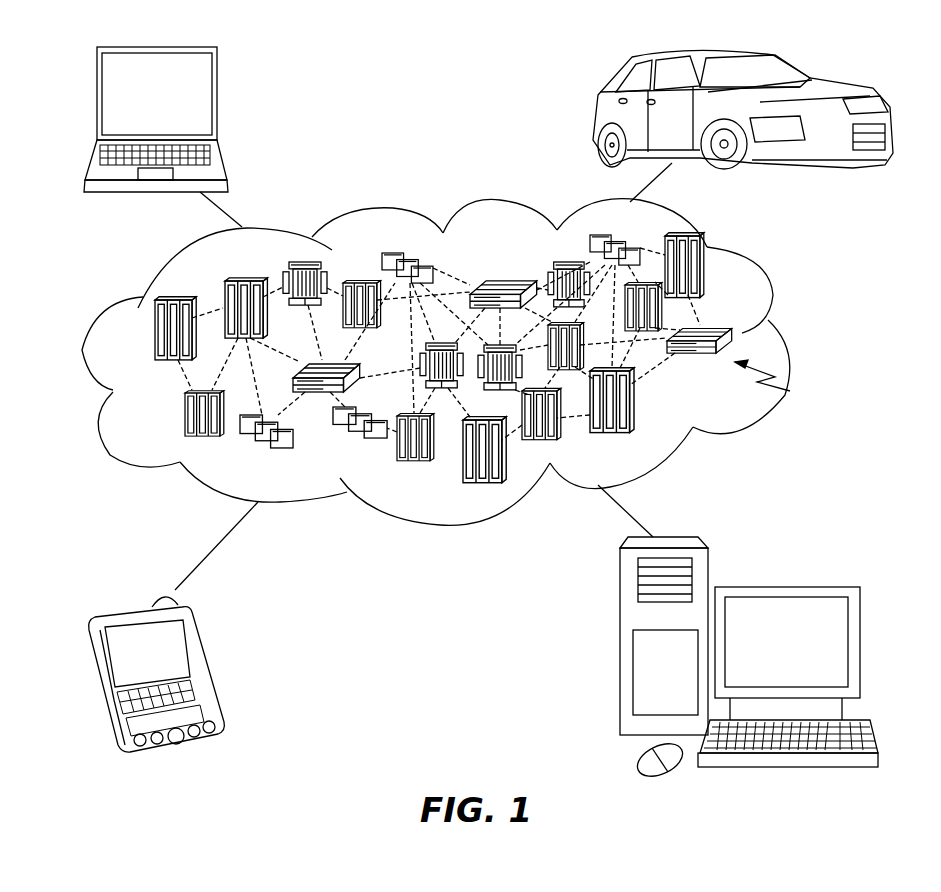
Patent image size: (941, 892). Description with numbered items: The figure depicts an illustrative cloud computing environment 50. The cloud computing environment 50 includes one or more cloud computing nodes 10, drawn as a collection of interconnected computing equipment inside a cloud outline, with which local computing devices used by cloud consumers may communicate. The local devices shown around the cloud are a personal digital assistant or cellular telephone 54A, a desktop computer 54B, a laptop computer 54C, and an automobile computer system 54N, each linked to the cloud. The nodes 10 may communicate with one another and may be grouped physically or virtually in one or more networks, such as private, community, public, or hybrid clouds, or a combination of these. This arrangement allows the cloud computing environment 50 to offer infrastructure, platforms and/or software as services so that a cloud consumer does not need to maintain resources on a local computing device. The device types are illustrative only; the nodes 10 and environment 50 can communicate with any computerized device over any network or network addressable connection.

The cloud computing node 10 is at (790, 391).
The cloud computing environment 50 is at (790, 332).
The personal digital assistant (PDA) or cellular telephone 54A is at (214, 666).
The desktop computer 54B is at (784, 587).
The laptop computer 54C is at (217, 102).
The automobile computer system 54N is at (596, 118).